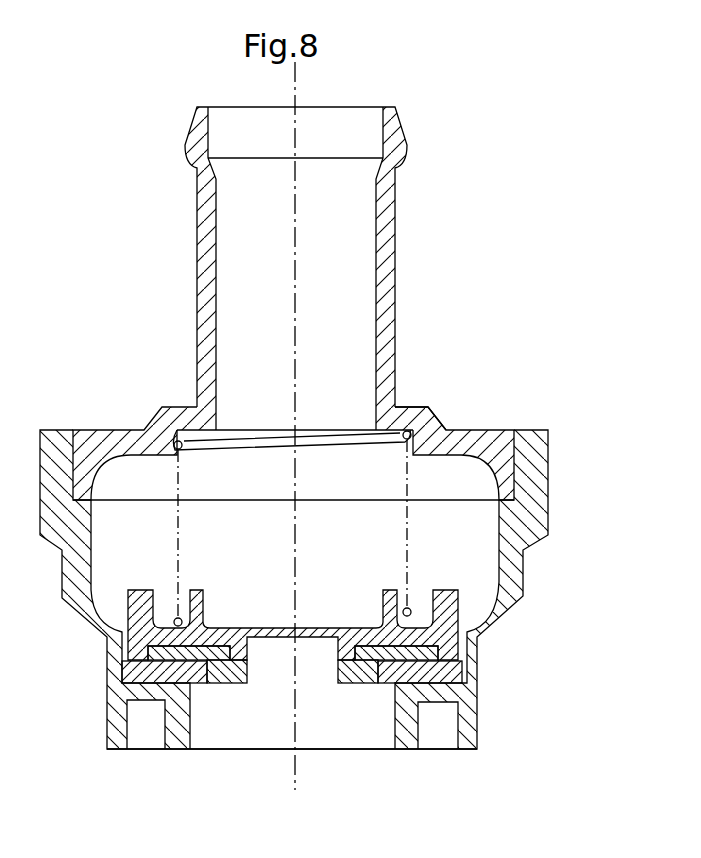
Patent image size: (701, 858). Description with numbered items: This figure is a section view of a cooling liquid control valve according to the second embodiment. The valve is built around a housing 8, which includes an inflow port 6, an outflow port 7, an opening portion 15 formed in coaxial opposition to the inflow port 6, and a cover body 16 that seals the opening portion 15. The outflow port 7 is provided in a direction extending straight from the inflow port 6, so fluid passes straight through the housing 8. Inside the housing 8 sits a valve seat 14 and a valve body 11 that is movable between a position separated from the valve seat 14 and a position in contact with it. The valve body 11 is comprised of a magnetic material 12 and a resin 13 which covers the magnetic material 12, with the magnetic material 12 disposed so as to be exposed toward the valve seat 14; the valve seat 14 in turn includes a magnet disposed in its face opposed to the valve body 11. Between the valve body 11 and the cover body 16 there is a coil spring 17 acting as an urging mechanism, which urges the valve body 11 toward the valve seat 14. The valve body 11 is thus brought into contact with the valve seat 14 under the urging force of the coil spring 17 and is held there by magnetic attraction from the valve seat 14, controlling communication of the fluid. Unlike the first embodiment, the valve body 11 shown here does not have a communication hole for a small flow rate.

The inflow port 6 is at (332, 740).
The outflow port 7 is at (373, 302).
The housing 8 is at (536, 533).
The valve body 11 is at (293, 636).
The magnetic material 12 is at (440, 656).
The resin 13 is at (355, 632).
The valve seat 14 is at (392, 686).
The opening portion 15 is at (117, 468).
The cover body 16 is at (428, 418).
The coil spring 17 is at (410, 532).